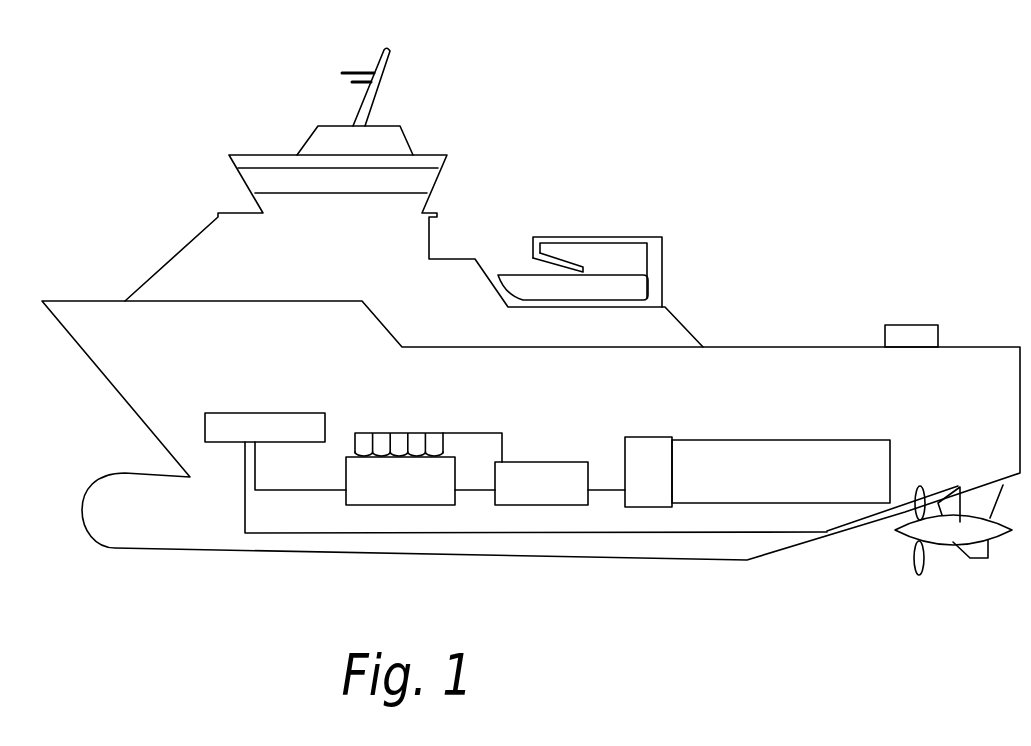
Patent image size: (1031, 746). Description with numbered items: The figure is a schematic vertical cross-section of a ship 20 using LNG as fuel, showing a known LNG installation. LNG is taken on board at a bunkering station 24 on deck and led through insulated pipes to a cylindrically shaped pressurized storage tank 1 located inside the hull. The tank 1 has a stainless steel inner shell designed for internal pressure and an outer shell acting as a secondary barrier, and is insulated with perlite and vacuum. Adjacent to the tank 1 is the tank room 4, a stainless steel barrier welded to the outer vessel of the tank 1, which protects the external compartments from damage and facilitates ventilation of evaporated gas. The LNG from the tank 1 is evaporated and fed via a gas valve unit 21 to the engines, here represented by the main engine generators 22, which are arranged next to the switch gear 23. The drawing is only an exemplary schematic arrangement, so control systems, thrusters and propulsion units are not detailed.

The ship 20 is at (740, 212).
The pressurized storage tank 1 is at (757, 440).
The tank room 4 is at (644, 437).
The gas valve unit 21 is at (528, 462).
The main engine generators 22 is at (346, 478).
The switch gear 23 is at (227, 413).
The bunkering station 24 is at (903, 325).